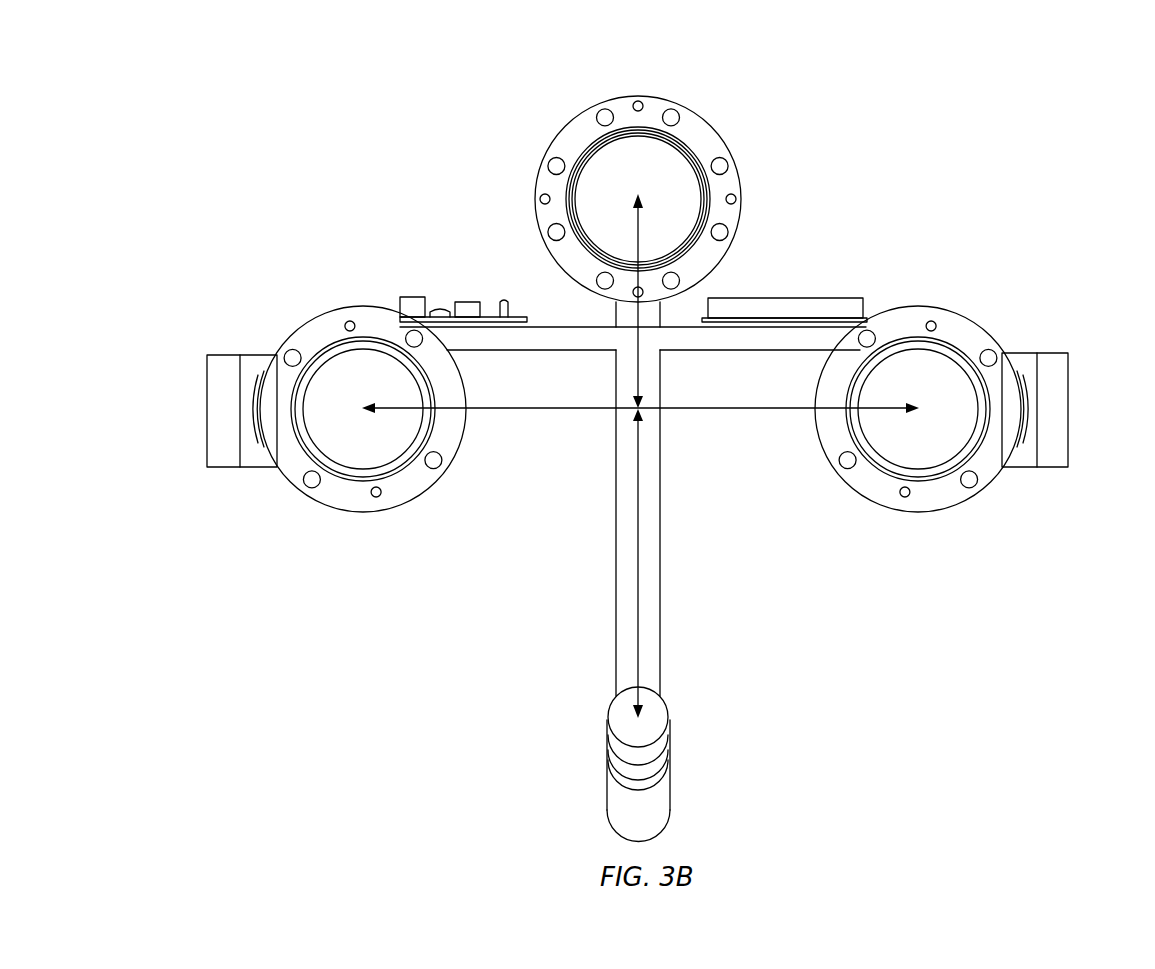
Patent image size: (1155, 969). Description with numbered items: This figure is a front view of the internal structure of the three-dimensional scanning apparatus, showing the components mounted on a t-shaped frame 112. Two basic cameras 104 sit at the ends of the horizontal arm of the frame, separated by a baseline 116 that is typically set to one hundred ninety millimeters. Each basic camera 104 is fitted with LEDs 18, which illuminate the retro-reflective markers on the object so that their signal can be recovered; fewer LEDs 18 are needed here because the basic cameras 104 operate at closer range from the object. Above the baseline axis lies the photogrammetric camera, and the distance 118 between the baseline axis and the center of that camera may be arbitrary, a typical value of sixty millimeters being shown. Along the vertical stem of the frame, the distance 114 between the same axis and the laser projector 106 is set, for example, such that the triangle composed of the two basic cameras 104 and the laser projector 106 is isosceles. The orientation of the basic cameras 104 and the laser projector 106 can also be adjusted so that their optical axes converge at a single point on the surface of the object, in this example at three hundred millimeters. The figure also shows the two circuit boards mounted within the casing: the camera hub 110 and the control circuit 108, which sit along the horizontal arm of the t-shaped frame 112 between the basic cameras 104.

The LEDs 18 is at (673, 118).
The basic cameras 104 is at (227, 467).
The laser projector 106 is at (670, 743).
The control circuit 108 is at (788, 298).
The camera hub 110 is at (445, 297).
The t-shaped frame 112 is at (617, 550).
The distance 114 is at (638, 544).
The baseline 116 is at (545, 413).
The distance 118 is at (636, 240).